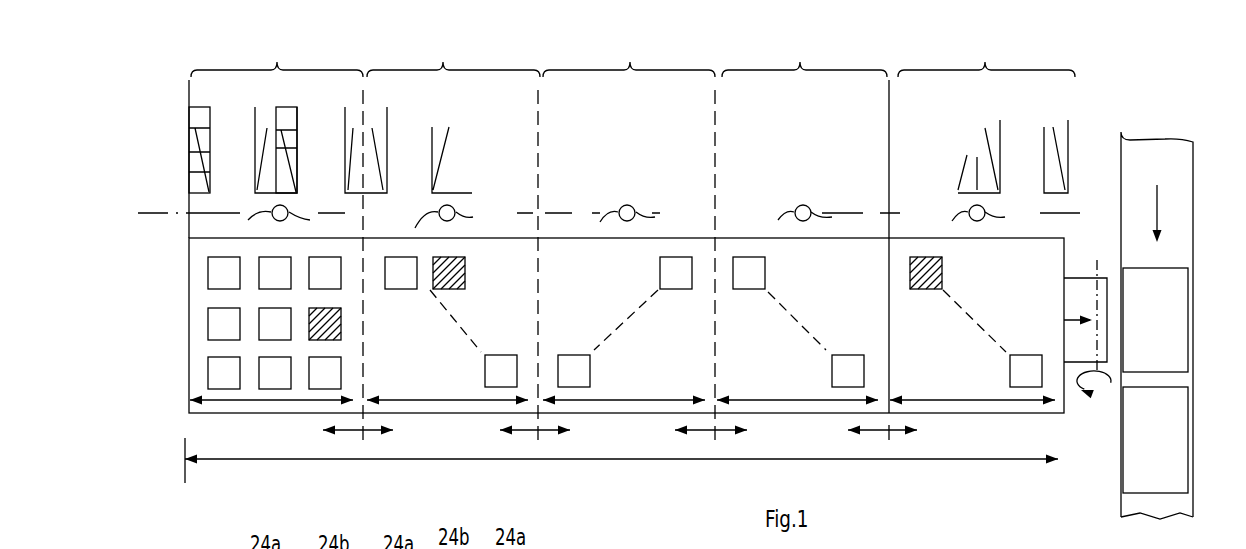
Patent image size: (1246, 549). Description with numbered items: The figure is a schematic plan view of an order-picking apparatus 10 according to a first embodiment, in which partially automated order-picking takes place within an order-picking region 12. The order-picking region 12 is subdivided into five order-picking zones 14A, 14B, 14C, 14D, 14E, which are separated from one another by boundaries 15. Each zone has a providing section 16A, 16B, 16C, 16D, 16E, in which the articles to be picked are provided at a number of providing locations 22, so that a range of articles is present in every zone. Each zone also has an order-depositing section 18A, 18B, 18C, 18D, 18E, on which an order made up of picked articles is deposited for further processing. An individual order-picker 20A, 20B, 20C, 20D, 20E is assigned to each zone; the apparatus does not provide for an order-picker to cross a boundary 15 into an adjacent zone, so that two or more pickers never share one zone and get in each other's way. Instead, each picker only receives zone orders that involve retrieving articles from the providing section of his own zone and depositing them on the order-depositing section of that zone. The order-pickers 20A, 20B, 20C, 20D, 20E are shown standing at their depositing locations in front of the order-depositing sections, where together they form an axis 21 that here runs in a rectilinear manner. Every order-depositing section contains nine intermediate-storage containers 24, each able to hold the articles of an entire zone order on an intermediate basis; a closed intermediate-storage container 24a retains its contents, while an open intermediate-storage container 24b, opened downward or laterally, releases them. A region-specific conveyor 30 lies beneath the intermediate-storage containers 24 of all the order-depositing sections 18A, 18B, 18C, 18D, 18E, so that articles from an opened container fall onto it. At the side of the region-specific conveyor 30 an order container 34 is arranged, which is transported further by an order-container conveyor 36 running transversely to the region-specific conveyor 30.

The order-picking apparatus 10 is at (1099, 101).
The order-picking region 12 is at (640, 460).
The order-picking zone 14A is at (272, 401).
The order-picking zone 14B is at (447, 401).
The order-picking zone 14C is at (628, 401).
The order-picking zone 14D is at (790, 401).
The order-picking zone 14E is at (990, 401).
The boundary 15 is at (360, 440).
The providing section 16A is at (277, 53).
The providing section 16B is at (453, 111).
The providing section 16C is at (629, 53).
The providing section 16D is at (804, 53).
The providing section 16E is at (986, 111).
The order-depositing section 18A is at (216, 331).
The order-depositing section 18B is at (433, 365).
The order-depositing section 18C is at (606, 313).
The order-depositing section 18D is at (793, 365).
The order-depositing section 18E is at (968, 365).
The order-picker 20A is at (288, 220).
The order-picker 20B is at (455, 220).
The order-picker 20C is at (633, 208).
The order-picker 20D is at (810, 207).
The order-picker 20E is at (970, 207).
The axis 21 is at (183, 217).
The providing location 22 is at (292, 133).
The intermediate-storage container 24 is at (225, 270).
The closed intermediate-storage container 24a is at (223, 323).
The open intermediate-storage container 24b is at (437, 290).
The region-specific conveyor 30 is at (1078, 297).
The order container 34 is at (1167, 354).
The order-container conveyor 36 is at (1158, 162).